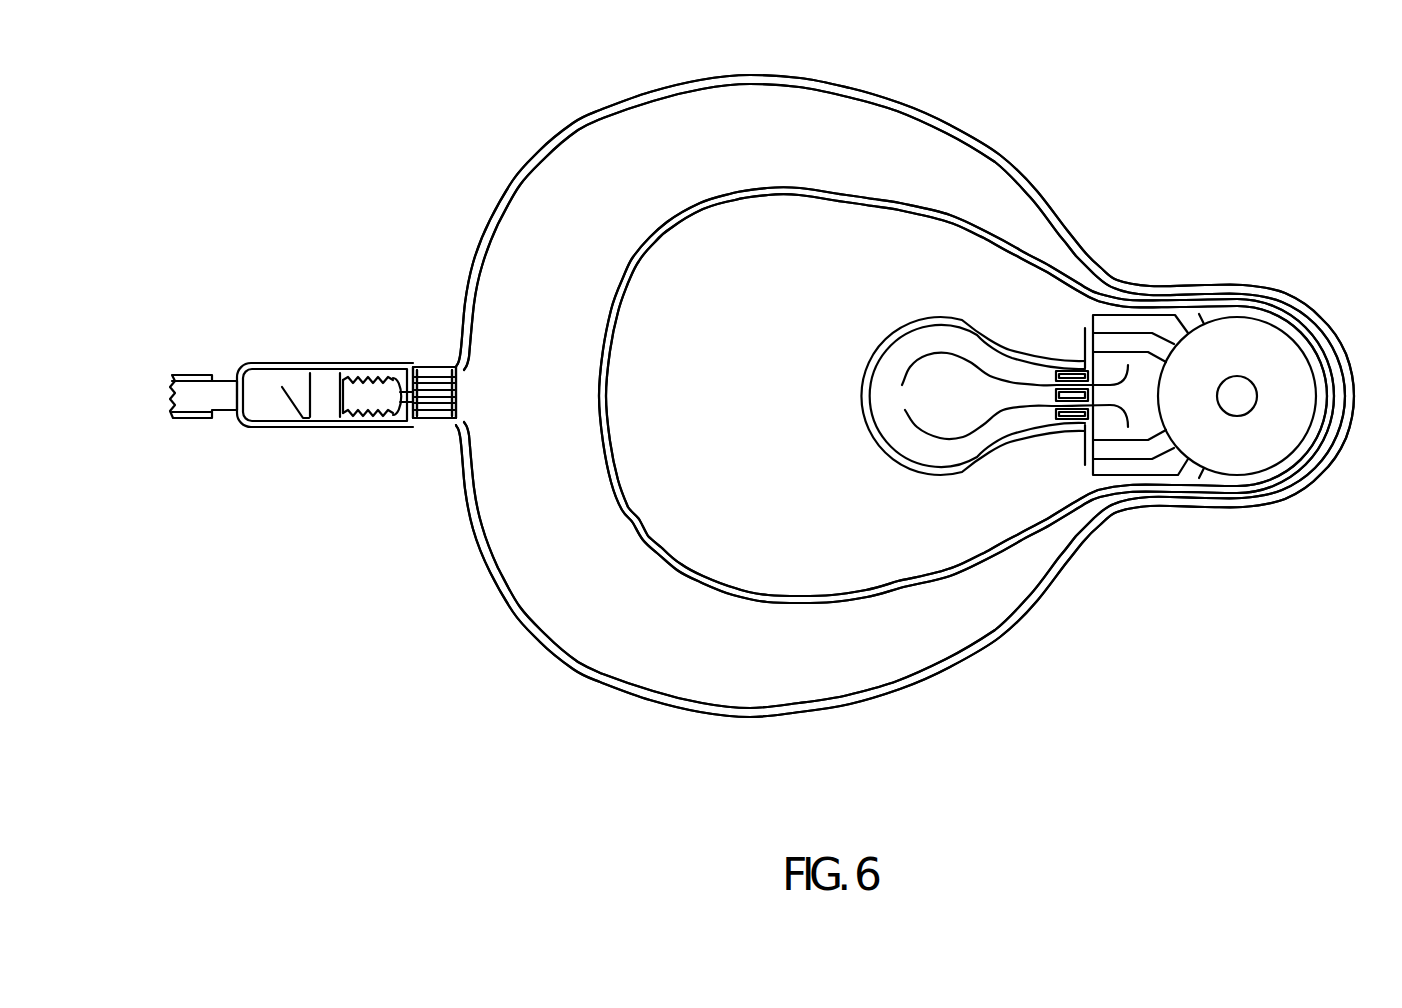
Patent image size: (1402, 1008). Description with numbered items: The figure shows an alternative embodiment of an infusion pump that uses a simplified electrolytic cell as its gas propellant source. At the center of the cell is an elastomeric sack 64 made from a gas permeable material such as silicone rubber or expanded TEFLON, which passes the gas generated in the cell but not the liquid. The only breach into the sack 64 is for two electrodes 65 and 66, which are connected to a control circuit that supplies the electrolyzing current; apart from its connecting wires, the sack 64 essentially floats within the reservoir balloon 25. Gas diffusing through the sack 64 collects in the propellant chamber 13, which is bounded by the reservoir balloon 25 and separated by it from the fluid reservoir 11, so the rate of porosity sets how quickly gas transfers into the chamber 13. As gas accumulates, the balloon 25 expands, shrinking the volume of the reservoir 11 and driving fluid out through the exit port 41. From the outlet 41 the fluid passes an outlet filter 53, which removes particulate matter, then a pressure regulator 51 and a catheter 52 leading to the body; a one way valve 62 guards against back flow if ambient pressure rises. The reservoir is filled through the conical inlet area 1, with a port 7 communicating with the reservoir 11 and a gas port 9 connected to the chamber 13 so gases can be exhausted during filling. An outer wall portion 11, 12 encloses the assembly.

The conical inlet area 1 is at (1282, 396).
The port 7 is at (1187, 307).
The gas port 9 is at (1079, 352).
The fluid reservoir 11 is at (613, 598).
The outer housing wall portion 12 is at (752, 718).
The propellant chamber 13 is at (897, 262).
The reservoir balloon 25 is at (893, 588).
The exit port 41 is at (480, 398).
The pressure regulator 51 is at (403, 425).
The catheter 52 is at (200, 420).
The outlet filter 53 is at (433, 367).
The one way valve 62 is at (290, 424).
The elastomeric sack 64 is at (893, 465).
The electrode 65 is at (900, 417).
The electrode 66 is at (900, 373).